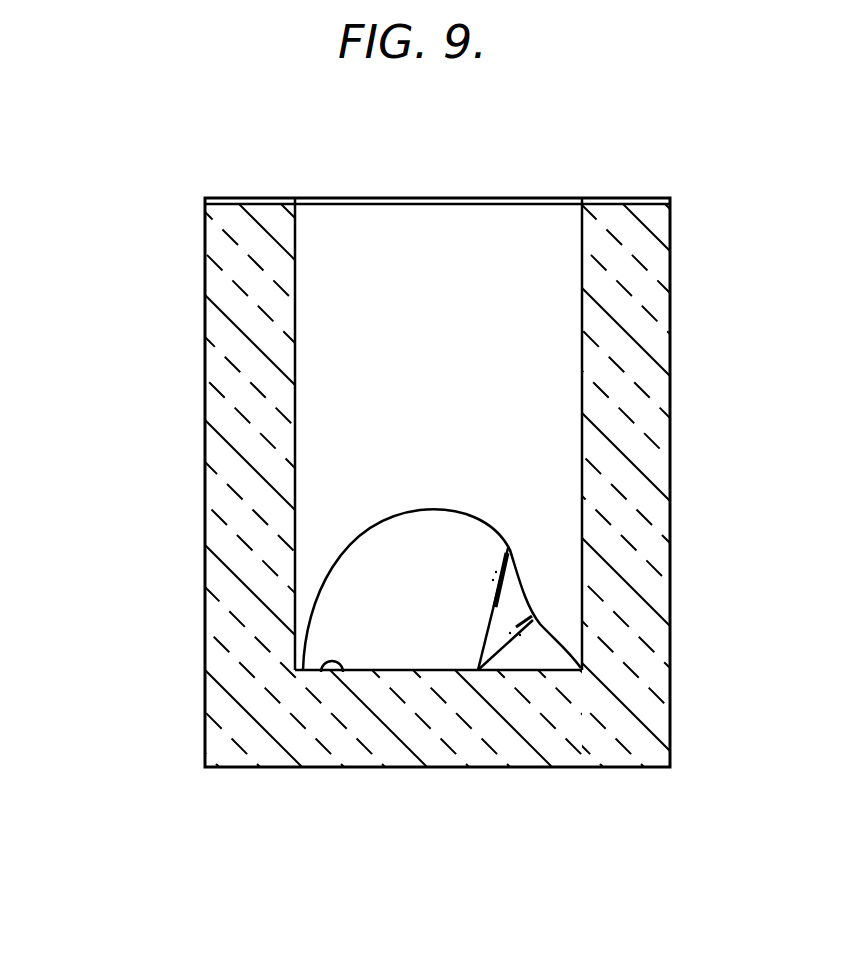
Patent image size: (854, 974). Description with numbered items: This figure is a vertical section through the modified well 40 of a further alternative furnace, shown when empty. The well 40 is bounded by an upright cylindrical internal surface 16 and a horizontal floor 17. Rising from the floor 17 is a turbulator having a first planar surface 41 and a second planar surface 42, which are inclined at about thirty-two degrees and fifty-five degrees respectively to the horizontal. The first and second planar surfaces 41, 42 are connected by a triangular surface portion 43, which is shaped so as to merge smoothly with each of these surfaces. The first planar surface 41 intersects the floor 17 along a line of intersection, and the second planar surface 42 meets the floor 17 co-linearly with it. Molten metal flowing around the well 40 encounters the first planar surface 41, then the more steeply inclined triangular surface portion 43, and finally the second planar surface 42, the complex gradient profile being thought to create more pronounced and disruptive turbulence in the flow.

The modified well 40 is at (154, 332).
The upright cylindrical internal surface 16 is at (570, 280).
The horizontal floor 17 is at (343, 673).
The first planar surface 41 is at (540, 652).
The second planar surface 42 is at (363, 563).
The triangular surface portion 43 is at (513, 605).